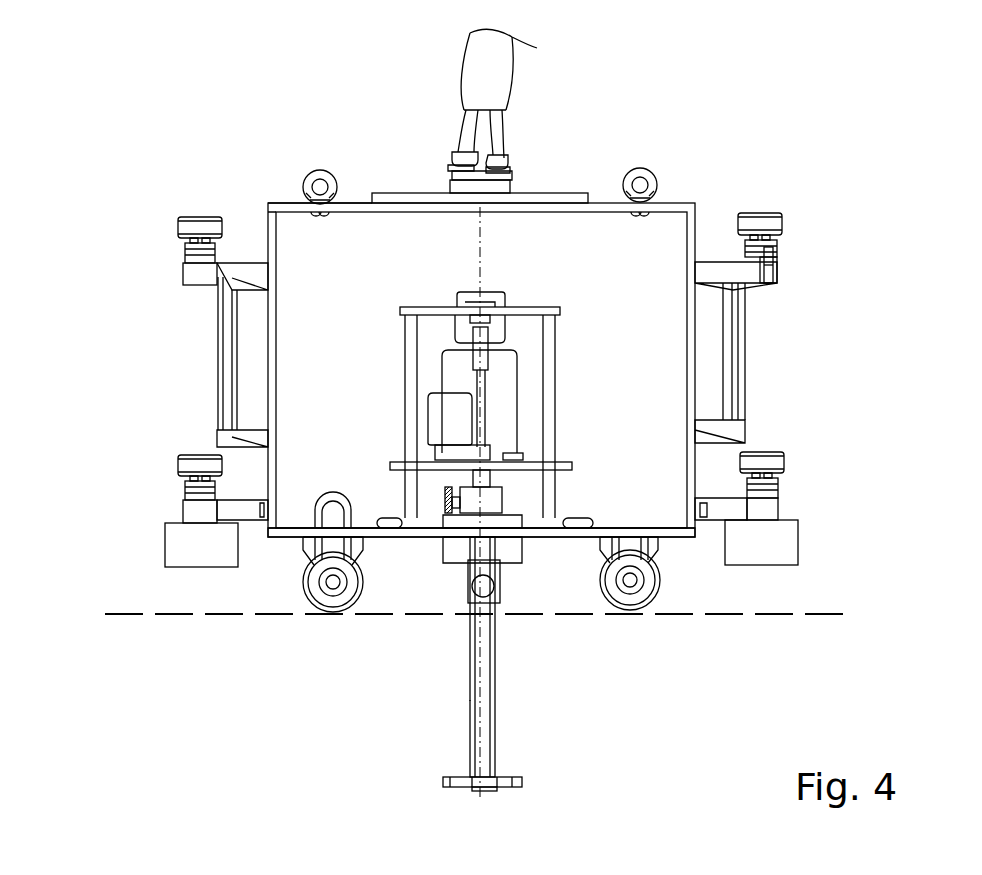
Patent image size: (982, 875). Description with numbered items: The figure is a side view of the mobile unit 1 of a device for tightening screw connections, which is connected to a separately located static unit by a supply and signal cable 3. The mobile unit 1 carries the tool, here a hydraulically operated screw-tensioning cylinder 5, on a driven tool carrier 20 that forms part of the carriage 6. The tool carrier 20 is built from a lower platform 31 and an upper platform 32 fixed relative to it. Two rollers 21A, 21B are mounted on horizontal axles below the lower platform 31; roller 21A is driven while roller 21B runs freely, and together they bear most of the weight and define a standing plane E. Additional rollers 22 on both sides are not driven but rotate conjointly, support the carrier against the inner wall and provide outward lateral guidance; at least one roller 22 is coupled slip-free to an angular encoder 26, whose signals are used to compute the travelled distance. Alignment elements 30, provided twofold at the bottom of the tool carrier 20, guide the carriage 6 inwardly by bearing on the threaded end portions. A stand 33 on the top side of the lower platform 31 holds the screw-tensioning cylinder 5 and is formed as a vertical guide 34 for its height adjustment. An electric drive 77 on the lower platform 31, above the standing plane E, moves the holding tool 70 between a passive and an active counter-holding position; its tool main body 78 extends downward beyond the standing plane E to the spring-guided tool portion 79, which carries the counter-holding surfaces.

The mobile unit 1 is at (243, 207).
The supply and signal cable 3 is at (500, 73).
The screw-tensioning cylinder 5 is at (502, 412).
The carriage 6 is at (680, 203).
The tool carrier 20 is at (400, 543).
The driven roller 21A is at (307, 600).
The freely running roller 21B is at (643, 590).
The additional rollers 22 is at (185, 228).
The angular encoder 26 is at (773, 267).
The alignment element 30 is at (162, 538).
The lower platform 31 is at (290, 530).
The upper platform 32 is at (280, 203).
The stand 33 is at (563, 350).
The vertical guide 34 is at (567, 455).
The holding tool 70 is at (523, 768).
The electric drive 77 is at (460, 527).
The tool main body 78 is at (497, 570).
The tool portion 79 is at (490, 782).
The standing plane E is at (168, 614).